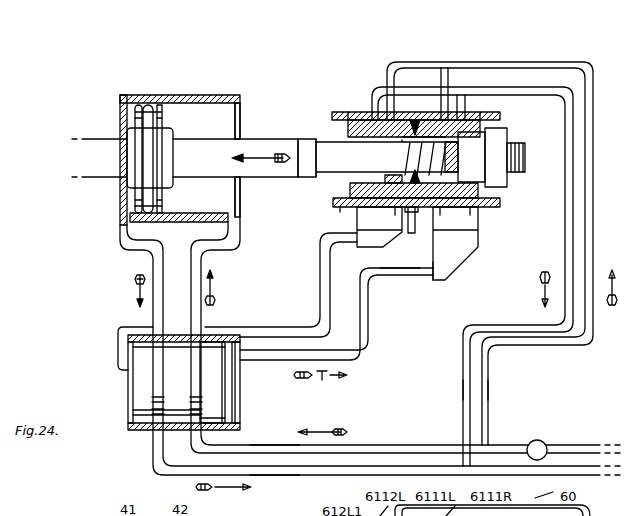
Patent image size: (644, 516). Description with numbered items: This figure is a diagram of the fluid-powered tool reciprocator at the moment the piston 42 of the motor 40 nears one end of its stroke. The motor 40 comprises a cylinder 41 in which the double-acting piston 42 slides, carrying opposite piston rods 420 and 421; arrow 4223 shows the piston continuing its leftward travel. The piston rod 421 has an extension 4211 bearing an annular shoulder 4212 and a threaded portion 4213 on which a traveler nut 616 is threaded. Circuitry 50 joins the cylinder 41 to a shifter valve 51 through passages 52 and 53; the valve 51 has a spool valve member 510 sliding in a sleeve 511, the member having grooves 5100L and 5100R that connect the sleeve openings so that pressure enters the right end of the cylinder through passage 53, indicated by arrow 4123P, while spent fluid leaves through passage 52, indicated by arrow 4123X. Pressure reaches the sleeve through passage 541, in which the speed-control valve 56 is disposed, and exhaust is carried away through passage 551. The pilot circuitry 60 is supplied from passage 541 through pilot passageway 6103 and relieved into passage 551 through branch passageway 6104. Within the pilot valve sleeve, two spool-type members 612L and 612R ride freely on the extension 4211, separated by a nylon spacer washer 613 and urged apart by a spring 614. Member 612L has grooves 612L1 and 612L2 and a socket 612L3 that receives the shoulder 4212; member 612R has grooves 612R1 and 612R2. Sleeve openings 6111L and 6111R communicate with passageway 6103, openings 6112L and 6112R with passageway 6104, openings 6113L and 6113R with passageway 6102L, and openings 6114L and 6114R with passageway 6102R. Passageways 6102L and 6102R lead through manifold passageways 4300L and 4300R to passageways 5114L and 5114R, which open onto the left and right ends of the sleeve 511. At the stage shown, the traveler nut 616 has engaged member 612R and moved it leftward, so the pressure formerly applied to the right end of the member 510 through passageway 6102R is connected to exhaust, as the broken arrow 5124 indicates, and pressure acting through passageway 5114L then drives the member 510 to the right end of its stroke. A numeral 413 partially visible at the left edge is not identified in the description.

The fluid-powered motor 40 is at (116, 108).
The cylinder 41 is at (131, 97).
The piston 42 is at (135, 122).
The piston rod 420 is at (94, 140).
The piston rod 421 is at (198, 153).
The piston rod extension 4211 is at (330, 150).
The annular shoulder 4212 is at (309, 150).
The threaded portion 4213 is at (508, 167).
The arrow 4223 is at (257, 155).
The rod connection 413 is at (7, 148).
The circuitry 50 is at (119, 212).
The shifter valve 51 is at (125, 383).
The passage 52 is at (123, 243).
The passage 53 is at (233, 223).
The spool valve member 510 is at (212, 395).
The cylindrical sleeve 511 is at (240, 423).
The circumferential groove 5100L is at (157, 348).
The circumferential groove 5100R is at (198, 348).
The passageway 5114L is at (319, 265).
The passageway 5114R is at (366, 318).
The broken arrow 5124 is at (321, 383).
The passage 541 is at (385, 446).
The exhaust passage 551 is at (160, 453).
The valve 56 is at (538, 441).
The pilot circuitry 60 is at (512, 55).
The passageway 6102L is at (357, 228).
The passageway 6102R is at (460, 216).
The pilot passageway 6103 is at (489, 372).
The pilot branch passageway 6104 is at (463, 363).
The sleeve opening 6111L is at (392, 77).
The sleeve opening 6111R is at (443, 80).
The sleeve opening 6112L is at (372, 103).
The sleeve opening 6112R is at (462, 103).
The sleeve opening 6113L is at (350, 205).
The sleeve opening 6113R is at (402, 206).
The sleeve opening 6114L is at (445, 216).
The sleeve opening 6114R is at (458, 206).
The pilot valve member 612L is at (353, 111).
The groove 612L1 is at (363, 112).
The groove 612L2 is at (398, 113).
The annular socket 612L3 is at (350, 178).
The pilot valve member 612R is at (500, 122).
The groove 612R1 is at (445, 112).
The groove 612R2 is at (466, 122).
The spacer washer 613 is at (412, 220).
The spring 614 is at (402, 158).
The traveler nut 616 is at (492, 146).
The arrow 4123X is at (136, 296).
The arrow 4123P is at (213, 297).
The passageway 4300L is at (385, 246).
The passageway 4300R is at (445, 259).